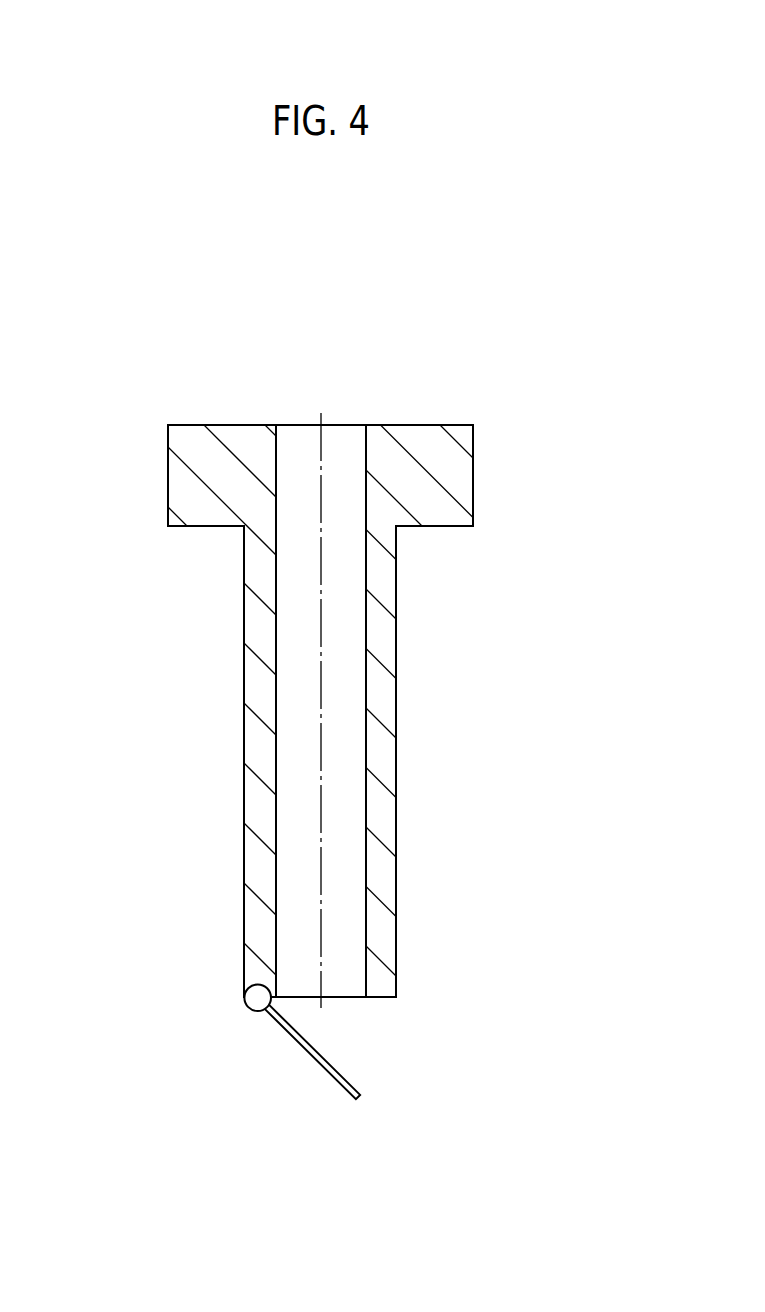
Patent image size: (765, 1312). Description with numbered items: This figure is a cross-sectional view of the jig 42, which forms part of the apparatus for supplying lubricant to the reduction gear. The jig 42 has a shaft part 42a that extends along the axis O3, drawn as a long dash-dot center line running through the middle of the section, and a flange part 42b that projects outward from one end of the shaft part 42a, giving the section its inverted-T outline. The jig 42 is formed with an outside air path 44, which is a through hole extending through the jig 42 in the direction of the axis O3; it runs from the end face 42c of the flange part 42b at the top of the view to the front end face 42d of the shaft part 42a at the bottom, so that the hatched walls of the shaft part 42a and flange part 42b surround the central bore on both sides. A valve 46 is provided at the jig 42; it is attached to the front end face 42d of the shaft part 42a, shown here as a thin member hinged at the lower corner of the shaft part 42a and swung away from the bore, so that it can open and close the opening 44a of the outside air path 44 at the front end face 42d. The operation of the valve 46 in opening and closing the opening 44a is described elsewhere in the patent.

The jig 42 is at (344, 696).
The shaft part 42a is at (257, 798).
The flange part 42b is at (180, 485).
The end face 42c is at (422, 425).
The front end face 42d is at (382, 998).
The outside air path 44 is at (313, 773).
The opening 44a is at (345, 998).
The valve 46 is at (293, 1038).
The axis O3 is at (322, 734).